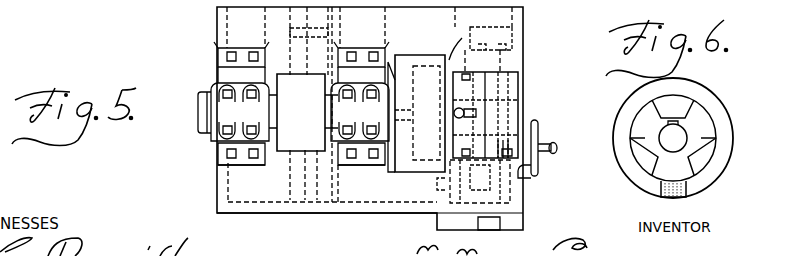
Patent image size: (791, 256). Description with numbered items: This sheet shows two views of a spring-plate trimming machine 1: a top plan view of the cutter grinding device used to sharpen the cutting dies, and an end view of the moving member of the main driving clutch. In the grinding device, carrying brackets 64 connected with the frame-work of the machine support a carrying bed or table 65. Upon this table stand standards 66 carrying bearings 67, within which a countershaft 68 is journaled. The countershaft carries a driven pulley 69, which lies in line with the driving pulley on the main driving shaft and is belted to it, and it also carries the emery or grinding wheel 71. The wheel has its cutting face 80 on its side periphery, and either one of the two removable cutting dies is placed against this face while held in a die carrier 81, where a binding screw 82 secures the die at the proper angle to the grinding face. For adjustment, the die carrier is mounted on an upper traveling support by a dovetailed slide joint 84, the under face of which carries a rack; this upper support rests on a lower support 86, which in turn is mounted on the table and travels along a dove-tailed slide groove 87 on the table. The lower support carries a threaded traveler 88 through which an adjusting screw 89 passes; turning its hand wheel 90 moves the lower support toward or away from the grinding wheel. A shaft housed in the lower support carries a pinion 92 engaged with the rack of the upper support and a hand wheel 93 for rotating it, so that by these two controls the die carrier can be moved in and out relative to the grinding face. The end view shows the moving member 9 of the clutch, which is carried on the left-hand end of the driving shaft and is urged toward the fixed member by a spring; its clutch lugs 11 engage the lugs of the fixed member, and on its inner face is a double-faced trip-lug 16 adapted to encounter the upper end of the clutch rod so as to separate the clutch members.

In FIG. 5, the switching device 1 is at (523, 4).
In FIG. 6, the moving member of the clutch 9 is at (706, 98).
In FIG. 6, the clutch lugs 11 is at (672, 100).
In FIG. 6, the double-faced trip-lug 16 is at (668, 190).
In FIG. 5, the carrying brackets 64 is at (294, 54).
In FIG. 5, the carrying bed or table 65 is at (275, 190).
In FIG. 5, the standards 66 is at (222, 150).
In FIG. 5, the bearings 67 is at (300, 103).
In FIG. 5, the countershaft 68 is at (205, 100).
In FIG. 5, the driven pulley 69 is at (303, 112).
In FIG. 5, the emery or grinding wheel 71 is at (413, 60).
In FIG. 5, the cutting face 80 is at (464, 36).
In FIG. 5, the die carrier 81 is at (508, 97).
In FIG. 5, the binding screw 82 is at (470, 112).
In FIG. 5, the dovetailed slide joint 84 is at (512, 195).
In FIG. 5, the lower support 86 is at (515, 222).
In FIG. 5, the dove-tailed slide groove 87 is at (417, 176).
In FIG. 5, the threaded traveler 88 is at (520, 128).
In FIG. 5, the adjusting screw 89 is at (535, 170).
In FIG. 5, the hand wheel 90 is at (557, 150).
In FIG. 5, the pinion 92 is at (485, 165).
In FIG. 5, the hand wheel 93 is at (538, 128).